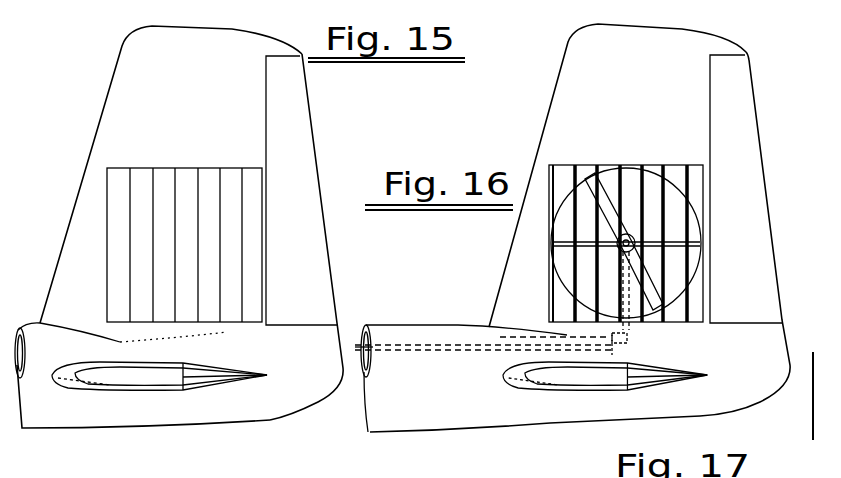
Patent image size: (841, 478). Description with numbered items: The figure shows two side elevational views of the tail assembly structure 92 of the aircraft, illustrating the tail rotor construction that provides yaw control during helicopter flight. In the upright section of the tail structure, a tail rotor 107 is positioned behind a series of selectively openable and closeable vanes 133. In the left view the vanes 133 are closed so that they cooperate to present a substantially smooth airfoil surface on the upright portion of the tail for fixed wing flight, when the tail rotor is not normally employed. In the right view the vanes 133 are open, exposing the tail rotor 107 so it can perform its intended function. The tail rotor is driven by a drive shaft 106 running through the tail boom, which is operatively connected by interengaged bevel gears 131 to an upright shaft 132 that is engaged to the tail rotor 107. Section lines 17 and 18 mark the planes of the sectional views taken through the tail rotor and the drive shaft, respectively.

In FIG. 15, the tail assembly structure 92 is at (203, 427).
In FIG. 16, the tail assembly structure 92 is at (507, 430).
In FIG. 16, the drive shaft 106 is at (393, 345).
In FIG. 16, the tail rotor 107 is at (650, 317).
In FIG. 16, the bevel gears 131 is at (640, 355).
In FIG. 16, the upright shaft 132 is at (630, 300).
In FIG. 15, the vanes 133 is at (250, 183).
In FIG. 16, the vanes 133 is at (617, 166).
In FIG. 15, the section line 17- 17 is at (90, 246).
In FIG. 16, the section line 18- 18 is at (550, 327).